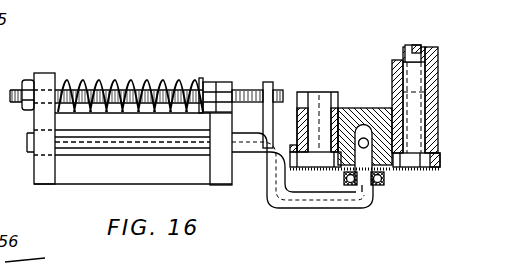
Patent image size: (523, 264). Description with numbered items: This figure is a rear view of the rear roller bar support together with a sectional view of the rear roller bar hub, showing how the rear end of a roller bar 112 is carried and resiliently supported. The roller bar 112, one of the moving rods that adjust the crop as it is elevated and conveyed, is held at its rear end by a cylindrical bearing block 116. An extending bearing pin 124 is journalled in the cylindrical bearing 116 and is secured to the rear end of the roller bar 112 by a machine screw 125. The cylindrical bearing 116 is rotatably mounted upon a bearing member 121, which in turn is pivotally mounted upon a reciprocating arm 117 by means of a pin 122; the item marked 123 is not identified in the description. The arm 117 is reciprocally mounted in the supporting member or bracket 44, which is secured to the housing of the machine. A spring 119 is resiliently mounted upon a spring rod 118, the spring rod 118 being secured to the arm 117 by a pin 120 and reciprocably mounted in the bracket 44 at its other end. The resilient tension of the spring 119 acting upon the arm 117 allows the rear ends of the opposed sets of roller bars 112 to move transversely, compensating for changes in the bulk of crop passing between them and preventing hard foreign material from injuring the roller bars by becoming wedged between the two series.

The supporting member 44 is at (118, 176).
The roller bar 112 is at (446, 42).
The cylindrical bearing block 116 is at (437, 117).
The reciprocating arm 117 is at (279, 199).
The spring rod 118 is at (237, 88).
The spring 119 is at (74, 88).
The pin 120 is at (268, 83).
The bearing member 121 is at (344, 128).
The pin 122 is at (365, 138).
The fastener 123 is at (390, 178).
The bearing pin 124 is at (413, 135).
The machine screw 125 is at (425, 168).